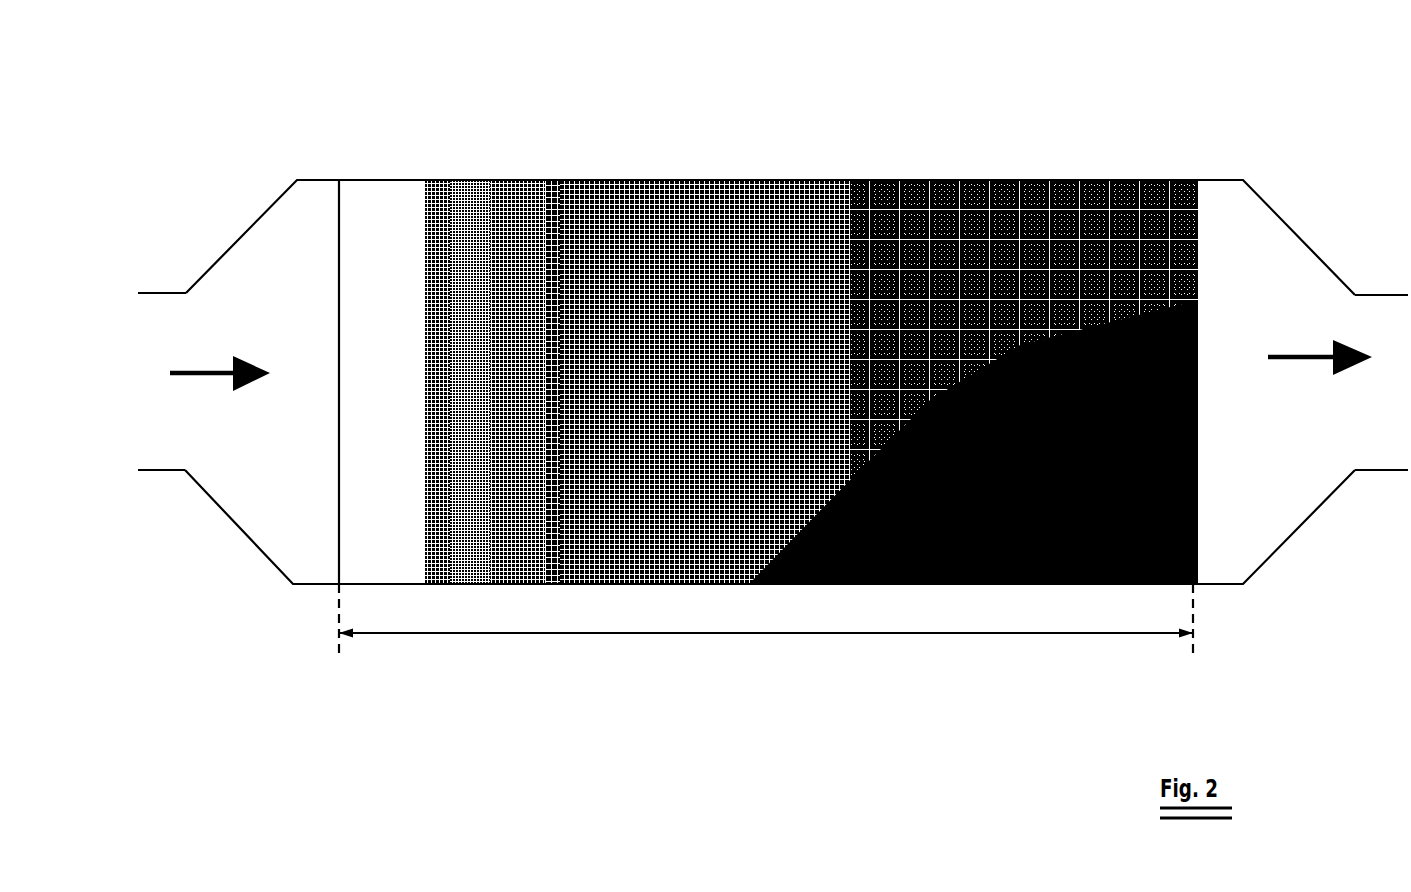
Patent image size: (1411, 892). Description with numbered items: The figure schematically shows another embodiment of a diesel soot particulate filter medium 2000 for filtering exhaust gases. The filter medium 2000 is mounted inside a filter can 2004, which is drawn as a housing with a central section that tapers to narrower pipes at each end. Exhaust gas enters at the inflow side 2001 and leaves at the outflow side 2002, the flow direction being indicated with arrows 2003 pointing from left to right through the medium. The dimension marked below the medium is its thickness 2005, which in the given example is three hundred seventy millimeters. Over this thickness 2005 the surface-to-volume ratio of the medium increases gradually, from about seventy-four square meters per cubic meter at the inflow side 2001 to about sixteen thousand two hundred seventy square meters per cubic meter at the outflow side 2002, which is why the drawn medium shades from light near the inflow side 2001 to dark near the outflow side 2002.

The diesel soot particulate filter medium 2000 is at (1109, 118).
The inflow side 2001 is at (167, 381).
The outflow side 2002 is at (1325, 382).
The arrows 2003 is at (767, 357).
The filter can 2004 is at (777, 382).
The thickness 2005 is at (766, 633).